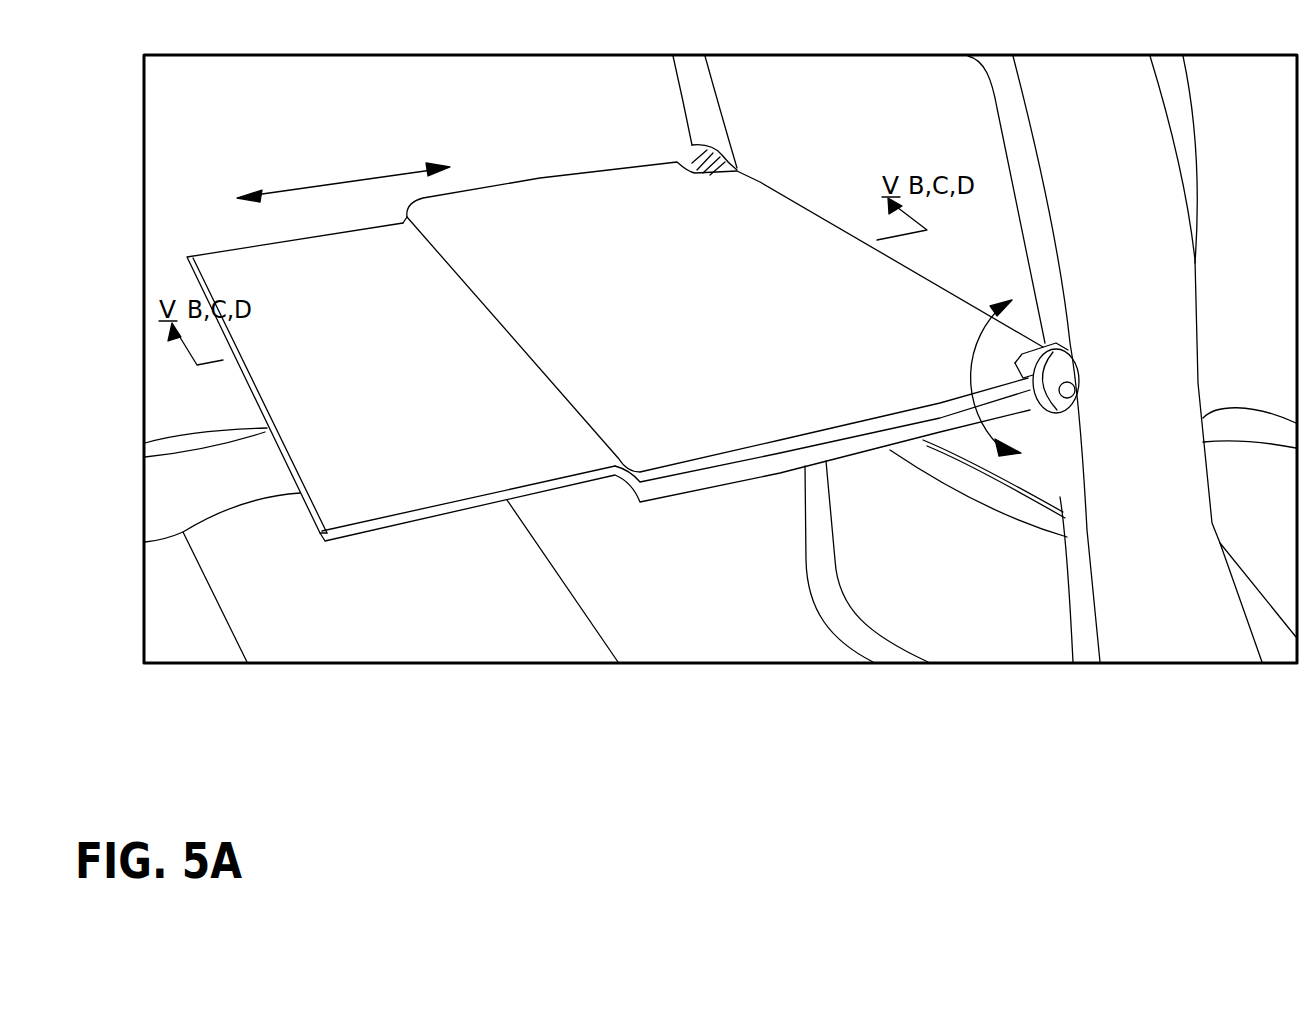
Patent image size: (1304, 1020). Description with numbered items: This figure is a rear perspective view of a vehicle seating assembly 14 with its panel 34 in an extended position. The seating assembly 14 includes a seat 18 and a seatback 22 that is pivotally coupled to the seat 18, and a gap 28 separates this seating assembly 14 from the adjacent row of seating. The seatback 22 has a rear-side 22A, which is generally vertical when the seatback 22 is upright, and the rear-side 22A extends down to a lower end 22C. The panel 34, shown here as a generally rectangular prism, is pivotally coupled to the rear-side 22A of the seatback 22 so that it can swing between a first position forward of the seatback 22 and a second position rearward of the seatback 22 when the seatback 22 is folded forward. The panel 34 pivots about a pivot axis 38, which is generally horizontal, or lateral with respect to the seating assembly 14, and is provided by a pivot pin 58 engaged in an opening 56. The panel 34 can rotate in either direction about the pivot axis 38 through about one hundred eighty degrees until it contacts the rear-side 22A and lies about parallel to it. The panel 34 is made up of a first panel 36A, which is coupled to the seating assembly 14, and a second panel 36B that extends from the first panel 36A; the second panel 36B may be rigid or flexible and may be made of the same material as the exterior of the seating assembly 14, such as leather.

The vehicle seating assembly 14 is at (279, 628).
The seat 18 is at (378, 630).
The seatback 22 is at (1093, 203).
The rear-side 22A is at (866, 155).
The lower end 22C is at (838, 637).
The gap 28 is at (683, 606).
The panel 34 is at (570, 160).
The first panel 36A is at (630, 288).
The second panel 36B is at (370, 375).
The pivot axis 38 is at (1073, 395).
The opening 56 is at (1055, 410).
The pivot pin 58 is at (1067, 399).